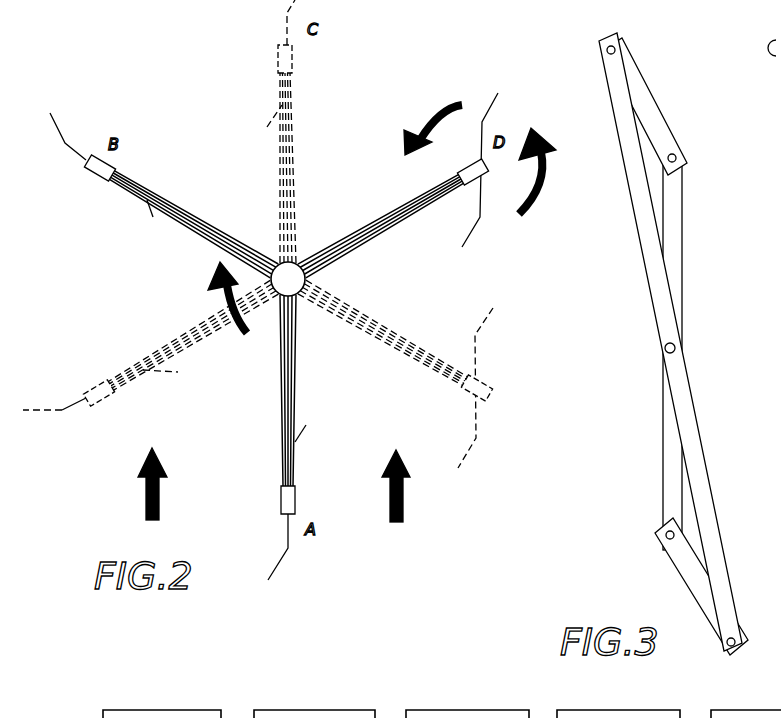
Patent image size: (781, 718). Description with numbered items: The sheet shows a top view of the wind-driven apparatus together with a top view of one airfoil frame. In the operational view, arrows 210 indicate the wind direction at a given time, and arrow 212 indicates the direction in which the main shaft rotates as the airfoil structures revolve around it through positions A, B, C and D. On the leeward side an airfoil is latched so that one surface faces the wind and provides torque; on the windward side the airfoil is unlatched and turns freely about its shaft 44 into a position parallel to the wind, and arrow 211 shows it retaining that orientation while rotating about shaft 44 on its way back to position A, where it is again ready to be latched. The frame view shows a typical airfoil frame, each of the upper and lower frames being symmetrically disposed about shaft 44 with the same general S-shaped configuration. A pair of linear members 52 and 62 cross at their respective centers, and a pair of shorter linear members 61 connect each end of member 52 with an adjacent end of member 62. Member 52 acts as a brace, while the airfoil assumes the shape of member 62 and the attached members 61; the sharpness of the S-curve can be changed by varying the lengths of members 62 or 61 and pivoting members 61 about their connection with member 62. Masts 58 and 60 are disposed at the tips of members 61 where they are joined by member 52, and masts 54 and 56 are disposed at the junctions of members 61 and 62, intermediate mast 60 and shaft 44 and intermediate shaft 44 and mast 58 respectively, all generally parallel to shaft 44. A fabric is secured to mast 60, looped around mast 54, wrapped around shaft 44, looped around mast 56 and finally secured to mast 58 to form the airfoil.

In FIG. 2, the arrows indicating wind direction 210 is at (418, 490).
In FIG. 2, the arrow indicating airfoil rotation about shaft 211 is at (538, 215).
In FIG. 2, the arrow indicating direction of rotation of shaft 212 is at (212, 273).
In FIG. 3, the shaft 44 is at (663, 348).
In FIG. 3, the linear member 52 is at (647, 265).
In FIG. 3, the mast 54 is at (682, 155).
In FIG. 3, the mast 56 is at (660, 530).
In FIG. 3, the mast 58 is at (722, 642).
In FIG. 3, the mast 60 is at (598, 50).
In FIG. 3, the shorter linear members 61 is at (687, 592).
In FIG. 3, the linear member 62 is at (682, 263).